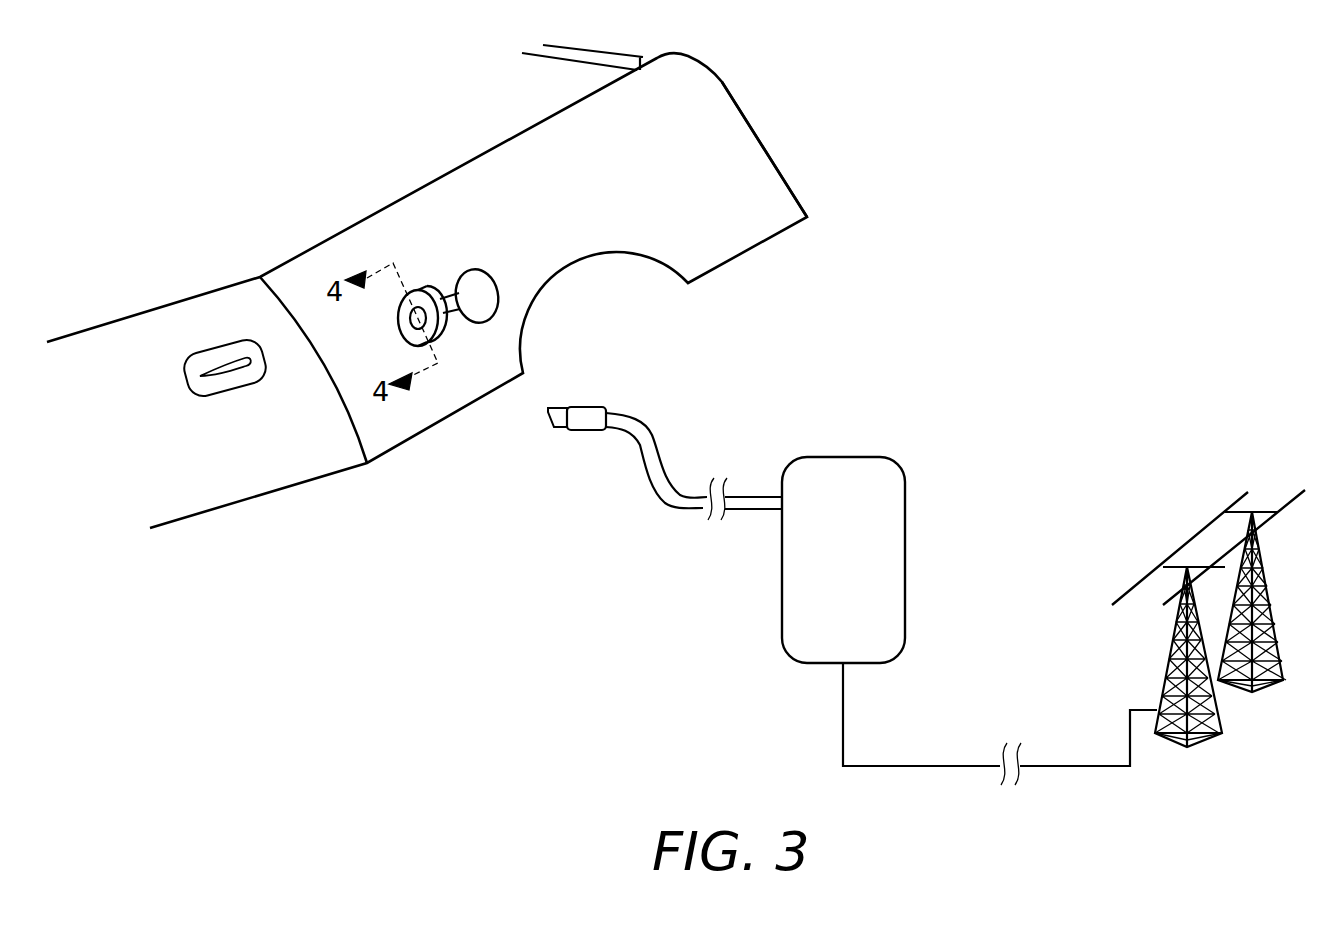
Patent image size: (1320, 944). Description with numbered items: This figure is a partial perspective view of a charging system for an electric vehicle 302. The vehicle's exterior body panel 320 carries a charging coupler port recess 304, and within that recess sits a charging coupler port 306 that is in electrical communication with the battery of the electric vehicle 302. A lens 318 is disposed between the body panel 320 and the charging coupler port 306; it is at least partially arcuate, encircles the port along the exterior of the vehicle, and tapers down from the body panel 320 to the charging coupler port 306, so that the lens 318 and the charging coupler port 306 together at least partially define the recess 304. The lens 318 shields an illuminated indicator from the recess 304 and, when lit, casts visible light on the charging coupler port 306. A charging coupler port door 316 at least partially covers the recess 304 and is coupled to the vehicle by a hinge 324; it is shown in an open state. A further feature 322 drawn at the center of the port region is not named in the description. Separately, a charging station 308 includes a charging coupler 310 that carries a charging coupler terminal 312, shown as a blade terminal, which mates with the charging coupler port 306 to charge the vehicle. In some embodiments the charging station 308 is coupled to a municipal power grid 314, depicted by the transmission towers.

The electric vehicle 302 is at (703, 60).
The body panel 320 is at (750, 130).
The charging coupler port recess 304 is at (410, 291).
The charging coupler port 306 is at (431, 323).
The lens 318 is at (441, 297).
The charging coupler port door 316 is at (481, 283).
The central opening 322 is at (410, 320).
The hinge 324 is at (436, 320).
The charging coupler terminal 312 is at (562, 406).
The charging coupler 310 is at (590, 407).
The charging station 308 is at (867, 457).
The municipal power grid 314 is at (1165, 512).